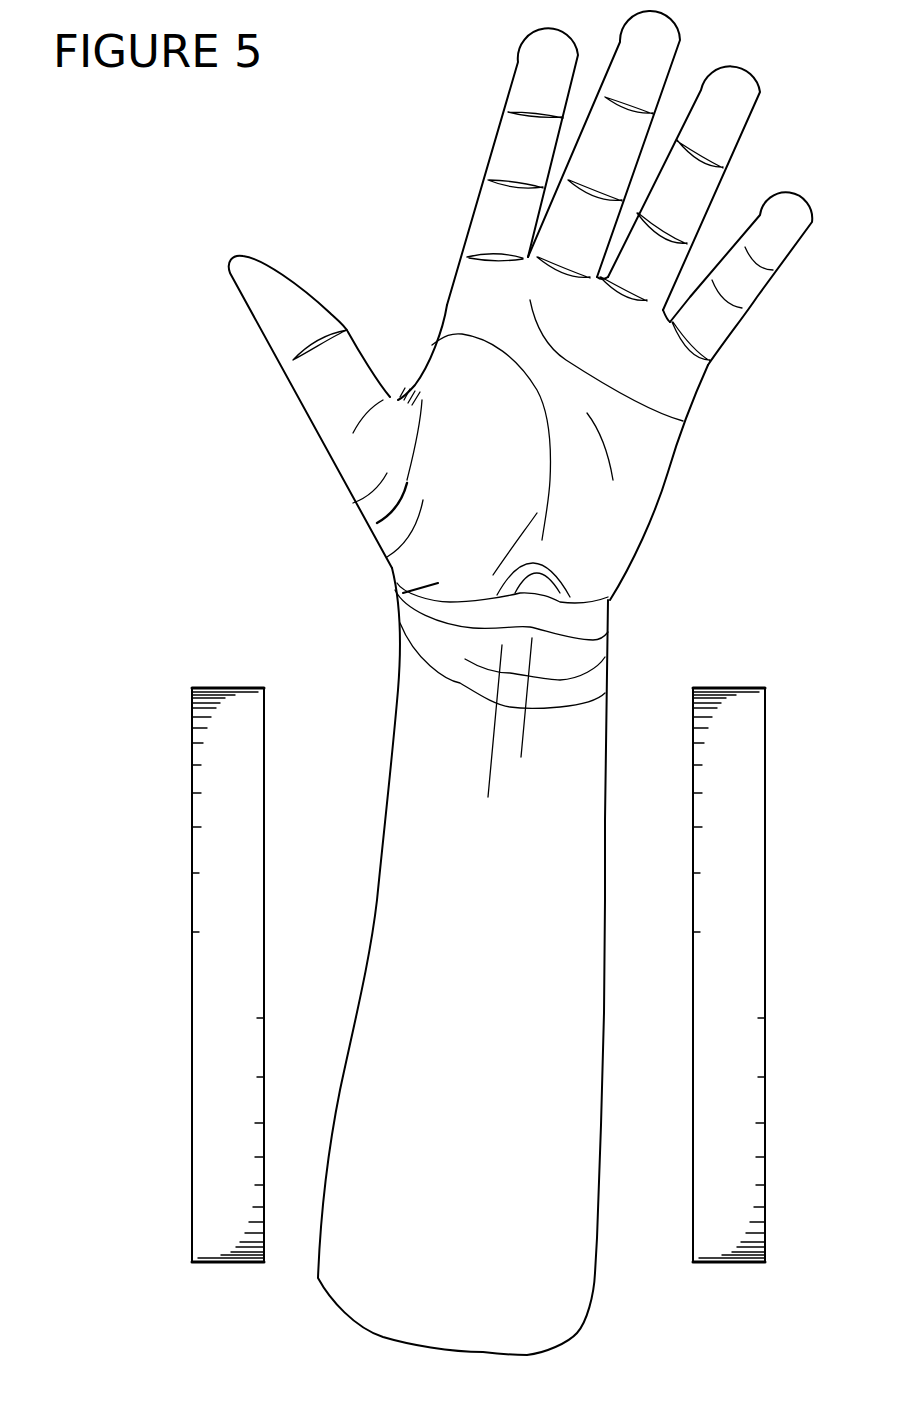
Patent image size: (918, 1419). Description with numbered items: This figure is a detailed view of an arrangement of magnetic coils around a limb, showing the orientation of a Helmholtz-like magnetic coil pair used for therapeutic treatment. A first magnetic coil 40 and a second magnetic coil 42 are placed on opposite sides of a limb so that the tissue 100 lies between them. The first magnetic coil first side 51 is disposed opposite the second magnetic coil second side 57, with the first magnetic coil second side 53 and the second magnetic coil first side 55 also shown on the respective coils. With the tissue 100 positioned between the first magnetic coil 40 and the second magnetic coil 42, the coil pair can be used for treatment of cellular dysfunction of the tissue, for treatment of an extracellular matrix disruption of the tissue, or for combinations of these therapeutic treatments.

The tissue 100 is at (645, 473).
The first magnetic coil 40 is at (212, 1245).
The second magnetic coil 42 is at (715, 1245).
The first magnetic coil first side 51 is at (192, 807).
The first magnetic coil second side 53 is at (264, 807).
The second magnetic coil first side 55 is at (693, 807).
The second magnetic coil second side 57 is at (765, 807).